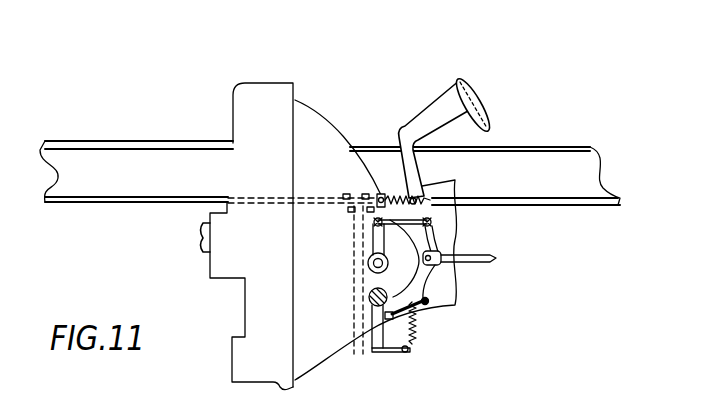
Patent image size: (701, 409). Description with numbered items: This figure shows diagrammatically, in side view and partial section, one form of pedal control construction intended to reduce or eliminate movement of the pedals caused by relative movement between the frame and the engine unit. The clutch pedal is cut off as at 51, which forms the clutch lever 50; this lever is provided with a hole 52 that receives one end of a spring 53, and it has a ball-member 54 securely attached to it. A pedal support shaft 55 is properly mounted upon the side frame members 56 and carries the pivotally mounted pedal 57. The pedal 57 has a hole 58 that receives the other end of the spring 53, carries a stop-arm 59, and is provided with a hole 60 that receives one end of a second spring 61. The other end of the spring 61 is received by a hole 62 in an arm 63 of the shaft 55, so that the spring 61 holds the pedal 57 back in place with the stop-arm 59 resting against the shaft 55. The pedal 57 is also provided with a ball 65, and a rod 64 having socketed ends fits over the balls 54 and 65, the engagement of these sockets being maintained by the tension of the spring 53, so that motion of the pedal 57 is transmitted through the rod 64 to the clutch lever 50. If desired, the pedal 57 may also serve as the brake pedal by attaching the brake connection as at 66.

The clutch lever 50 is at (372, 247).
The cut-off point of clutch pedal 51 is at (382, 193).
The hole 52 is at (378, 193).
The spring 53 is at (410, 200).
The ball-member 54 is at (374, 222).
The pedal support shaft 55 is at (369, 297).
The side frame members 56 is at (82, 152).
The pedal 57 is at (435, 118).
The hole 58 is at (428, 202).
The stop-arm 59 is at (372, 322).
The hole 60 is at (430, 303).
The spring 61 is at (417, 332).
The hole 62 is at (410, 352).
The arm 63 is at (394, 352).
The rod 64 is at (440, 239).
The ball 65 is at (432, 222).
The brake connection 66 is at (441, 268).